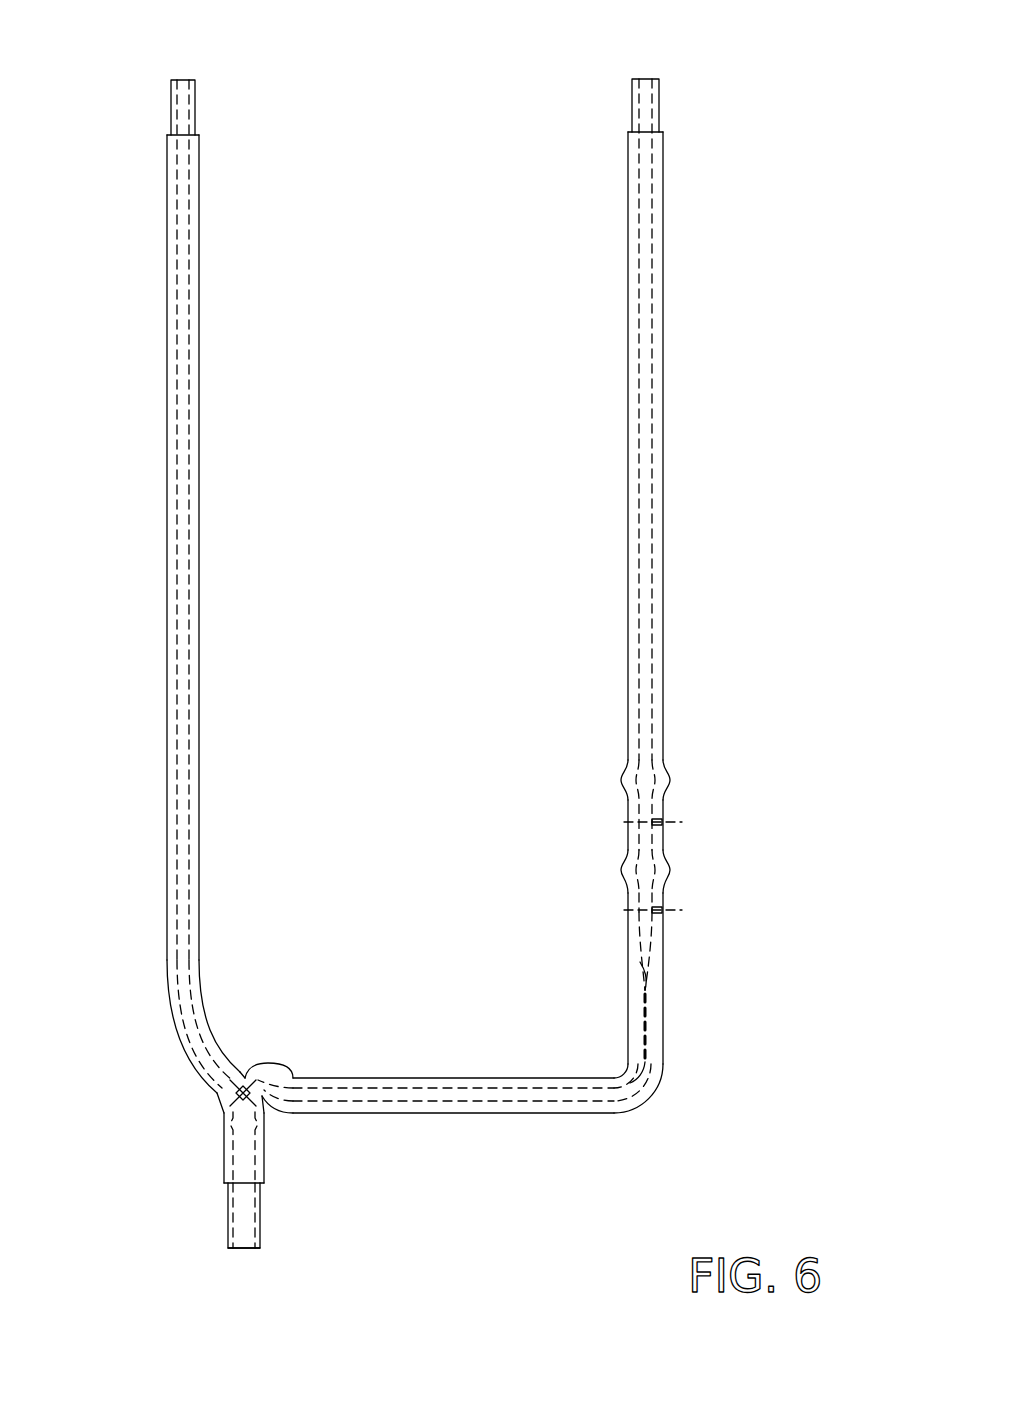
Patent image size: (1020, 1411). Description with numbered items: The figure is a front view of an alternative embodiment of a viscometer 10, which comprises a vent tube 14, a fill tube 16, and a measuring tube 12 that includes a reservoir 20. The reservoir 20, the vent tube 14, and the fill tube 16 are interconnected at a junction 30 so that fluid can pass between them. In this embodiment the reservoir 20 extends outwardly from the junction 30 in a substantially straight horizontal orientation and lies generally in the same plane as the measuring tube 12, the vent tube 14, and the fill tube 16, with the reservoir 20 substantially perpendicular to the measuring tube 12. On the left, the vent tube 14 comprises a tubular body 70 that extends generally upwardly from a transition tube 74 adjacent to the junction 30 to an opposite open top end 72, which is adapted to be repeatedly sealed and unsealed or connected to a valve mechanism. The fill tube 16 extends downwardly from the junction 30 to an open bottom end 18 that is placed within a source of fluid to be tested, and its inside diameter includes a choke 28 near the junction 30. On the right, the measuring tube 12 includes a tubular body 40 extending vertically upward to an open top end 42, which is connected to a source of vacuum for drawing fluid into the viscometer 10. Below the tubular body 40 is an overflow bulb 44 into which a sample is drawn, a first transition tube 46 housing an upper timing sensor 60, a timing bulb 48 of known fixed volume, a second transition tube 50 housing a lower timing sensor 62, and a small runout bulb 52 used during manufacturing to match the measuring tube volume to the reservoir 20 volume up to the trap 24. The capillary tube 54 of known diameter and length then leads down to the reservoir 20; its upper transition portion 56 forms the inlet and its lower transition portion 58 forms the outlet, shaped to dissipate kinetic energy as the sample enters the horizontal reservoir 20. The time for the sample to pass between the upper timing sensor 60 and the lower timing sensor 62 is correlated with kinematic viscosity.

The viscometer 10 is at (434, 155).
The measuring tube 12 is at (663, 323).
The vent tube 14 is at (167, 319).
The fill tube 16 is at (243, 1178).
The open bottom end 18 is at (244, 1250).
The reservoir 20 is at (450, 1100).
The trap 24 is at (280, 1082).
The choke 28 is at (235, 1118).
The junction 30 is at (243, 1090).
The tubular body 40 is at (648, 457).
The open top end 42 is at (643, 90).
The overflow bulb 44 is at (656, 780).
The first transition tube 46 is at (650, 806).
The timing bulb 48 is at (650, 867).
The second transition tube 50 is at (650, 894).
The runout bulb 52 is at (655, 955).
The capillary tube 54 is at (650, 1022).
The upper transition portion 56 is at (640, 962).
The lower transition portion 58 is at (622, 1080).
The upper timing sensor 60 is at (678, 822).
The lower timing sensor 62 is at (678, 910).
The tubular body 70 is at (183, 555).
The open top end 72 is at (184, 90).
The transition tube 74 is at (190, 1050).